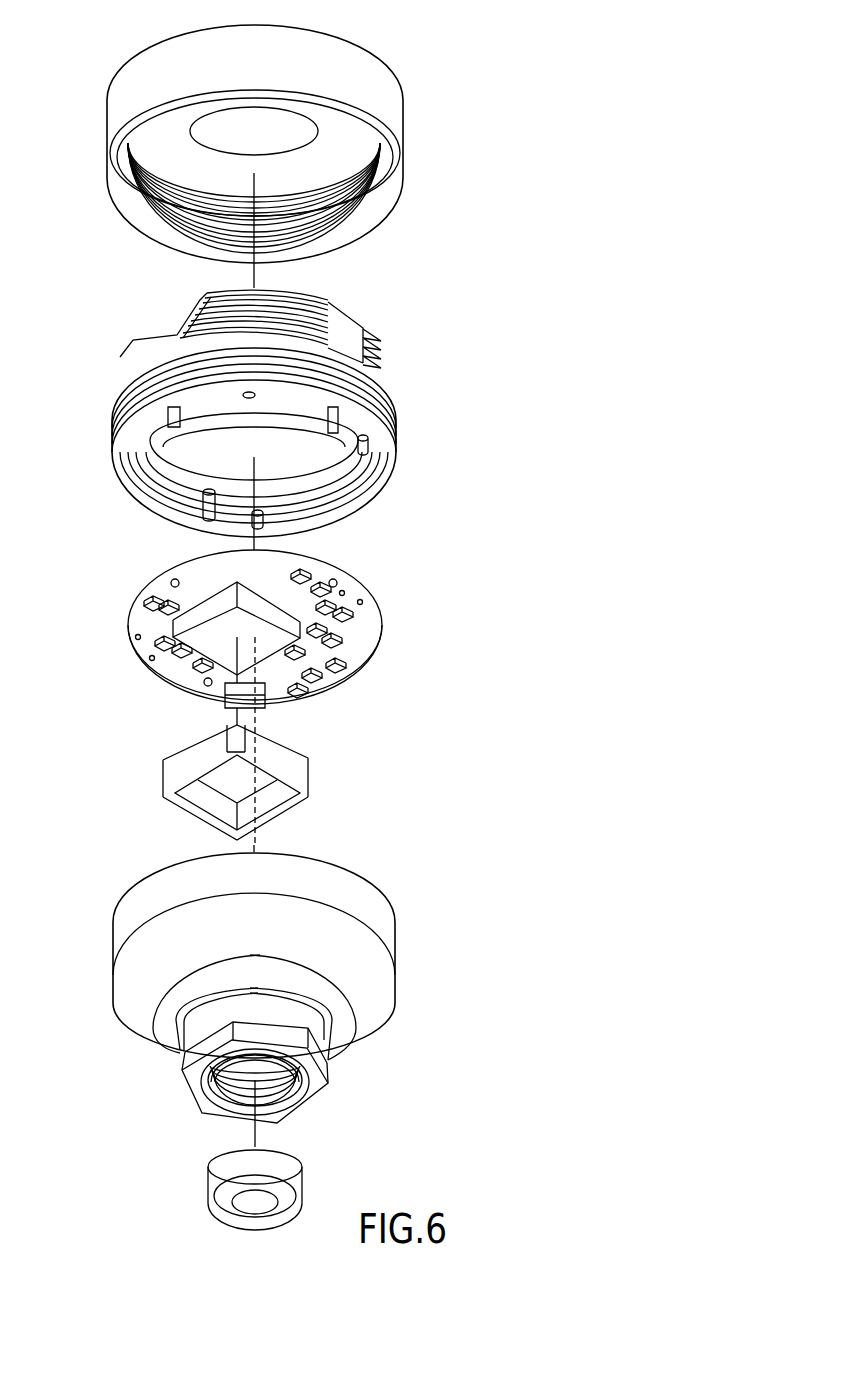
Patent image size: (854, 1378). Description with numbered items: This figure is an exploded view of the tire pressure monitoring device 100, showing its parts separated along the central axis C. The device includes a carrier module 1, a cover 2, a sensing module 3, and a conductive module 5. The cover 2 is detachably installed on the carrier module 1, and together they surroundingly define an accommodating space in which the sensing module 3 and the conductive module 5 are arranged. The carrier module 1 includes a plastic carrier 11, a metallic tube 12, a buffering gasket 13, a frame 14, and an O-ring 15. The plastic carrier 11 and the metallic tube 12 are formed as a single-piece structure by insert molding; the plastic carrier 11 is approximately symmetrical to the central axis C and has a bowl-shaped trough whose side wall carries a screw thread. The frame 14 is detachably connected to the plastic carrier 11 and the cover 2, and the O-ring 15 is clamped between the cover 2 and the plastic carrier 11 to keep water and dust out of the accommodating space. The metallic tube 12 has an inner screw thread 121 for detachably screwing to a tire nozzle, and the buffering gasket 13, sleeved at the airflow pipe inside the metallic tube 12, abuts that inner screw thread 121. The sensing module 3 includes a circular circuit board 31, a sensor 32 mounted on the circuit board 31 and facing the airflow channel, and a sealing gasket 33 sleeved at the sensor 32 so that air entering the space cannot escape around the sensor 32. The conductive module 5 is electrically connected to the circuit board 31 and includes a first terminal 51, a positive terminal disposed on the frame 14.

The tire pressure monitoring device 100 is at (70, 30).
The cover 2 is at (390, 66).
The carrier module 1 is at (280, 420).
The frame 14 is at (396, 346).
The O-ring 15 is at (472, 330).
The conductive module 5 is at (136, 323).
The first terminal 51 is at (175, 328).
The sensing module 3 is at (292, 890).
The circuit board 31 is at (353, 647).
The sensor 32 is at (267, 648).
The sealing gasket 33 is at (289, 782).
The plastic carrier 11 is at (380, 1040).
The metallic tube 12 is at (290, 1073).
The inner screw thread 121 is at (230, 1086).
The central axis C is at (254, 1131).
The buffering gasket 13 is at (326, 1182).